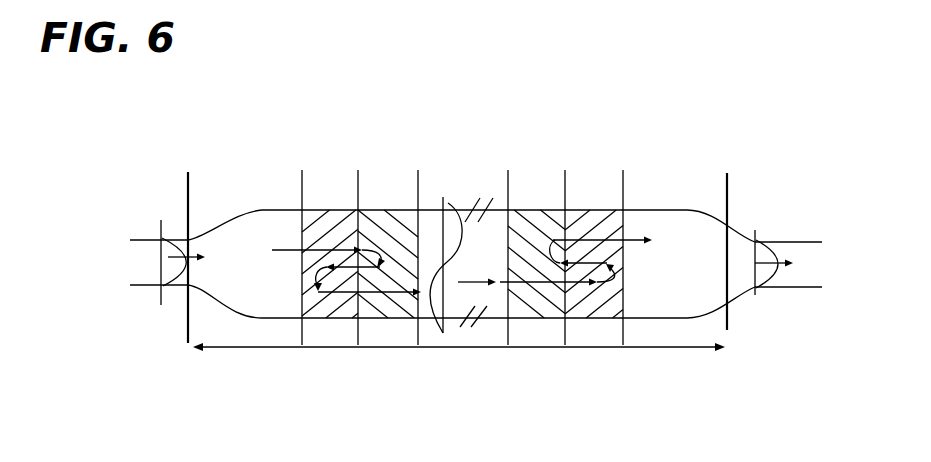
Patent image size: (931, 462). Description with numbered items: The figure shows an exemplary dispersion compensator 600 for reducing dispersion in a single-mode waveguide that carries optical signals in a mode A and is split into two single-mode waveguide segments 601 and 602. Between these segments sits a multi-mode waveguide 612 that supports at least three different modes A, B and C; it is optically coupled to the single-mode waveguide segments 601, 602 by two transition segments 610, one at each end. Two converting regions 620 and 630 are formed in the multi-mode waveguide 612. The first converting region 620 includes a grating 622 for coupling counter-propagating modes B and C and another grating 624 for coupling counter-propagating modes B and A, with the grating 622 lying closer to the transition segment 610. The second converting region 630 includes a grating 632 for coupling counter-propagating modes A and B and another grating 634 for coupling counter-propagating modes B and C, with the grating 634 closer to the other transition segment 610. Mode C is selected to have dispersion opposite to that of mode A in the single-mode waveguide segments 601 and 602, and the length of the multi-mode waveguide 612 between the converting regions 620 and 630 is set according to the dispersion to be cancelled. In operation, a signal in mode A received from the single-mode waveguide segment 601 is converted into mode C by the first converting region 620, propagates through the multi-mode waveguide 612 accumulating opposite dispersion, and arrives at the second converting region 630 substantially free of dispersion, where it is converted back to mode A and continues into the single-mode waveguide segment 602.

The dispersion compensator 600 is at (270, 88).
The single-mode waveguide segment 601 is at (145, 287).
The single-mode waveguide segment 602 is at (805, 240).
The transition segment 610 is at (215, 230).
The multi-mode waveguide 612 is at (283, 210).
The first converting region 620 is at (362, 122).
The grating 622 is at (328, 318).
The grating 624 is at (392, 318).
The second converting region 630 is at (574, 135).
The grating 632 is at (535, 318).
The grating 634 is at (590, 318).